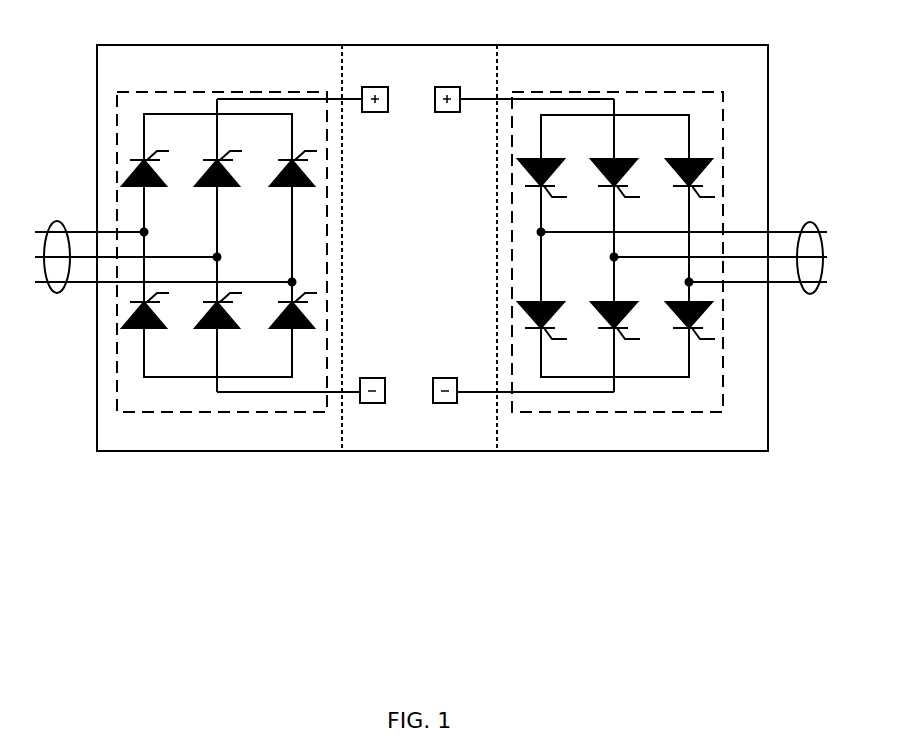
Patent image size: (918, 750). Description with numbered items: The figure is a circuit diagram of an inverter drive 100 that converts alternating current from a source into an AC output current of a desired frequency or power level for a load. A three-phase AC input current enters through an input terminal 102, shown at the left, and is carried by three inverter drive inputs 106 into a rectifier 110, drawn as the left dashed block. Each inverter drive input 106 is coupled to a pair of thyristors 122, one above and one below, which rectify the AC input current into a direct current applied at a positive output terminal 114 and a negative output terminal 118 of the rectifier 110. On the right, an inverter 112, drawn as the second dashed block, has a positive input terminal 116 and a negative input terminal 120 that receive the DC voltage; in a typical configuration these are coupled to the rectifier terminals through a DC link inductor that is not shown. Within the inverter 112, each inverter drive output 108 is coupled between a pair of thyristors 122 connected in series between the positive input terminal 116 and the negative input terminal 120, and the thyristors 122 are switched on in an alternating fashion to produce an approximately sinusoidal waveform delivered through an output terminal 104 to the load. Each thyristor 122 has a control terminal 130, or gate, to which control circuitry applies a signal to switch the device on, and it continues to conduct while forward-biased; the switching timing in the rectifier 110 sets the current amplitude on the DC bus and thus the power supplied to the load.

The inverter drive 100 is at (190, 45).
The input terminal 102 is at (57, 293).
The output terminal 104 is at (810, 294).
The inverter drive inputs 106 is at (260, 282).
The inverter drive outputs 108 is at (570, 232).
The rectifier 110 is at (233, 92).
The inverter 112 is at (605, 92).
The positive output terminal 114 is at (373, 112).
The positive input terminal 116 is at (445, 112).
The negative output terminal 118 is at (368, 403).
The negative input terminal 120 is at (443, 403).
The thyristors 122 is at (476, 240).
The control terminal 130 is at (171, 152).